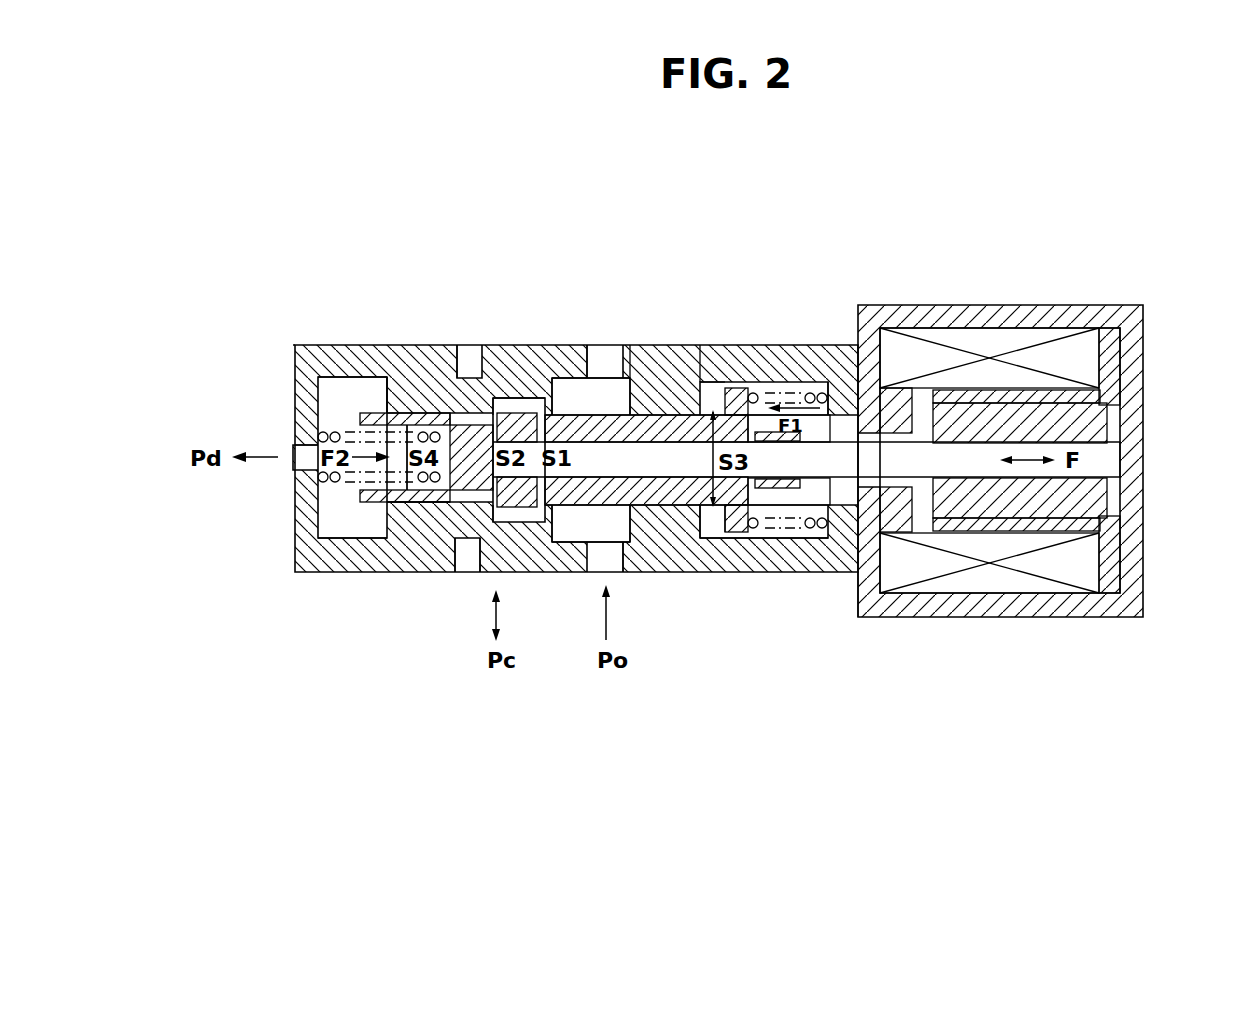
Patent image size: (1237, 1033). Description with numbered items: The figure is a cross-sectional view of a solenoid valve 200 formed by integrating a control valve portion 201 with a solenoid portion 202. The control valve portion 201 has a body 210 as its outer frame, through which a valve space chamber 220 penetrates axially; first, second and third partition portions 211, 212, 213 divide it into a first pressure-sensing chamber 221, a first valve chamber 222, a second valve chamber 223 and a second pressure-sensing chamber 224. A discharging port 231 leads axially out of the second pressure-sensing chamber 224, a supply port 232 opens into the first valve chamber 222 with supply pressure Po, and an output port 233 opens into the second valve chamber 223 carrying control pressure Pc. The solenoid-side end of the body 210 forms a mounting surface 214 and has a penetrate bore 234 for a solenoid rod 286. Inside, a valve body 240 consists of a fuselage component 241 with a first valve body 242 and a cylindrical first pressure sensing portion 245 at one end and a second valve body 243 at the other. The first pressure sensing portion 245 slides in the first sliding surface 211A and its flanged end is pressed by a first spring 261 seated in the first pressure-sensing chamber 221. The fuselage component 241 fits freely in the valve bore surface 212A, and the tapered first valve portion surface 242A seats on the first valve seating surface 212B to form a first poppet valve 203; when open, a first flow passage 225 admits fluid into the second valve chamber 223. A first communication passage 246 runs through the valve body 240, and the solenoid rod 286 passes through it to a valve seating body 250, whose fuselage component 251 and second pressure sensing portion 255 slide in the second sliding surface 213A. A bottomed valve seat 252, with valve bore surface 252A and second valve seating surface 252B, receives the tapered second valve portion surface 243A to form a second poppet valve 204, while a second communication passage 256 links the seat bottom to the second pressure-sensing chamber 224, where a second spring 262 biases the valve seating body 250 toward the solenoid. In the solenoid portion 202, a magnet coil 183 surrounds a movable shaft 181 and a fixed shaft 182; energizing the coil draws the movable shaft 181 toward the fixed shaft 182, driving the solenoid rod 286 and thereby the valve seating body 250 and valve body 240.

The solenoid valve 200 is at (983, 768).
The control valve portion 201 is at (752, 602).
The solenoid portion 202 is at (1027, 632).
The first poppet valve 203 is at (633, 345).
The second poppet valve 204 is at (520, 345).
The body 210 is at (807, 345).
The first partition portion 211 is at (737, 345).
The first sliding surface 211A is at (700, 345).
The second partition portion 212 is at (620, 345).
The valve bore surface 212A is at (598, 380).
The first valve seating surface 212B is at (680, 345).
The third partition portion 213 is at (388, 345).
The second sliding surface 213A is at (400, 345).
The mounting surface 214 is at (858, 600).
The valve space chamber 220 is at (345, 345).
The first pressure-sensing chamber 221 is at (782, 345).
The first valve chamber 222 is at (642, 572).
The second valve chamber 223 is at (430, 572).
The second pressure-sensing chamber 224 is at (308, 540).
The first flow passage 225 is at (560, 572).
The discharging port 231 is at (295, 425).
The supply port 232 is at (633, 572).
The output port 233 is at (466, 572).
The penetrate bore 234 is at (838, 345).
The valve body 240 is at (698, 572).
The fuselage component 241 is at (530, 572).
The first valve body 242 is at (580, 572).
The first valve portion surface 242A is at (650, 345).
The second valve body 243 is at (452, 572).
The second valve portion surface 243A is at (520, 572).
The first pressure sensing portion 245 is at (712, 572).
The first communication passage 246 is at (665, 572).
The valve seating body 250 is at (410, 345).
The fuselage component 251 is at (455, 345).
The valve seat 252 is at (505, 345).
The valve bore surface 252A is at (462, 345).
The second valve seating surface 252B is at (560, 380).
The second pressure sensing portion 255 is at (358, 572).
The second communication passage 256 is at (402, 550).
The first spring 261 is at (800, 572).
The second spring 262 is at (318, 510).
The movable shaft 181 is at (1097, 425).
The fixed shaft 182 is at (937, 345).
The magnet coil 183 is at (1067, 363).
The solenoid rod 286 is at (962, 453).